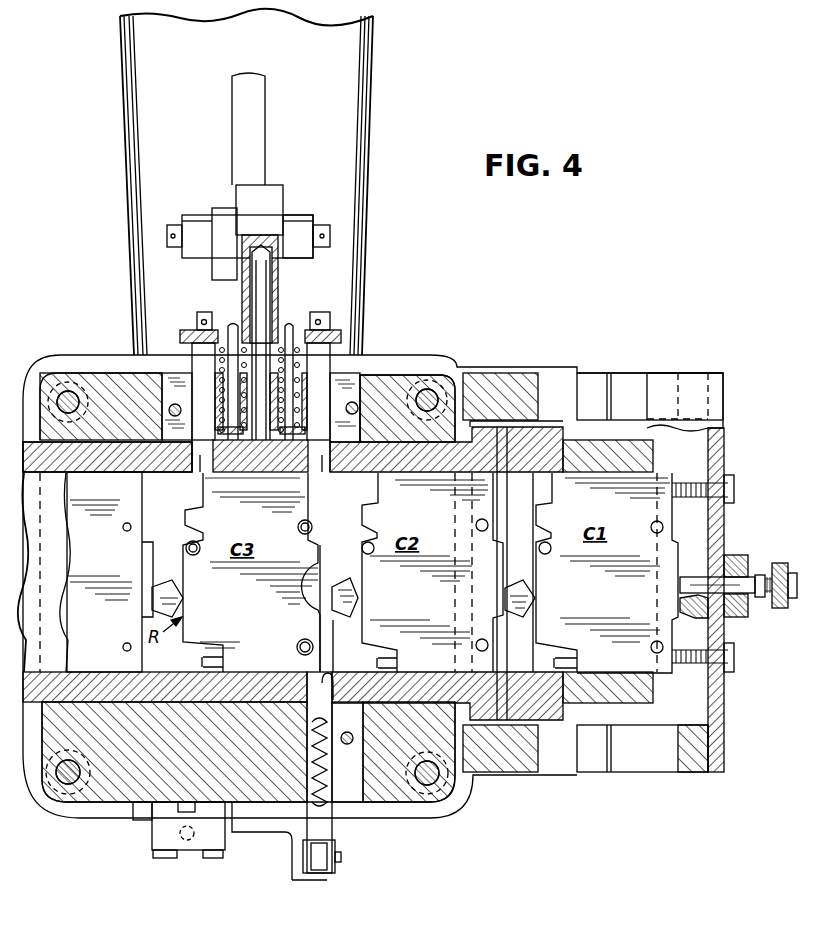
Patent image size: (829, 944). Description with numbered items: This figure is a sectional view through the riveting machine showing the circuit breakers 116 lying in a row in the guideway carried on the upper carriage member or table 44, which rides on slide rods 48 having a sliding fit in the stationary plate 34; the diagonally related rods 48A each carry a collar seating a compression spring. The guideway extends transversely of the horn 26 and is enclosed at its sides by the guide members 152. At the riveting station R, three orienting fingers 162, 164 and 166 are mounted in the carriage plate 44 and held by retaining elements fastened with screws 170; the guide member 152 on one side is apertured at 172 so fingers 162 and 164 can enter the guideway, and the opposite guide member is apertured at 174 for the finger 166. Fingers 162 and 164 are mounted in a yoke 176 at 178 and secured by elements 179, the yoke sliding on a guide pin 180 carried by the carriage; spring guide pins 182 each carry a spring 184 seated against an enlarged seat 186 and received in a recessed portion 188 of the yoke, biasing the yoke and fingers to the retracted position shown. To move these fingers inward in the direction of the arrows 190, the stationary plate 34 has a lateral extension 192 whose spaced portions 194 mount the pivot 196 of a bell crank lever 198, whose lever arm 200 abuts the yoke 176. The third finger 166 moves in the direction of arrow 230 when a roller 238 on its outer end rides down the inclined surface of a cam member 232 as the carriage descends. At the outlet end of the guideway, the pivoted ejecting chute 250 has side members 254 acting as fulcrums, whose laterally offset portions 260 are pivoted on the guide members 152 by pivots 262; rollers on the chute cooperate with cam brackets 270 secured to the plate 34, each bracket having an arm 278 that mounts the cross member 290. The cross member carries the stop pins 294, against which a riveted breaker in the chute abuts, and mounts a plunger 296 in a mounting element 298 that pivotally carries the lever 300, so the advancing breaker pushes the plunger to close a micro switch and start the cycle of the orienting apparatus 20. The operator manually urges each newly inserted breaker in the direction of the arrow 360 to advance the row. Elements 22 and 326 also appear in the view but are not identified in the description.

The orienting apparatus 20 is at (88, 338).
The housing 22 is at (372, 108).
The horn 26 is at (124, 125).
The stationary plate 34 is at (470, 802).
The upper carriage member 44 is at (202, 752).
The slide rod 48 is at (80, 402).
The diagonally related slide rod 48A is at (416, 404).
The circuit breaker 116 is at (178, 523).
The guide member 152 is at (106, 472).
The orienting finger 162 is at (192, 395).
The orienting finger 164 is at (304, 392).
The third finger 166 is at (306, 712).
The screw 170 is at (175, 416).
The aperture 172 is at (255, 486).
The aperture 174 is at (312, 692).
The yoke 176 is at (286, 270).
The finger mounting 178 is at (192, 337).
The securing element 179 is at (198, 318).
The guide pin 180 is at (264, 304).
The spring guide pin 182 is at (230, 323).
The spring 184 is at (214, 366).
The enlarged seat 186 is at (260, 449).
The recessed portion 188 is at (220, 352).
The arrow 190 is at (190, 476).
The lateral extension 192 is at (184, 268).
The spaced portion 194 is at (196, 214).
The pivot 196 is at (332, 236).
The bell crank lever 198 is at (254, 116).
The lever arm 200 is at (272, 186).
The arrow 230 is at (326, 656).
The cam member 232 is at (262, 832).
The roller 238 is at (328, 874).
The article ejecting chute 250 is at (612, 435).
The side member 254 is at (660, 452).
The laterally offset portion 260 is at (508, 440).
The pivot 262 is at (512, 456).
The cam bracket 270 is at (647, 370).
The bracket arm 278 is at (695, 772).
The cross member 290 is at (724, 448).
The detent element 294 is at (737, 490).
The plunger 296 is at (742, 582).
The mounting element 298 is at (738, 556).
The lever 300 is at (782, 608).
The switch 326 is at (186, 842).
The arrow 360 is at (28, 587).